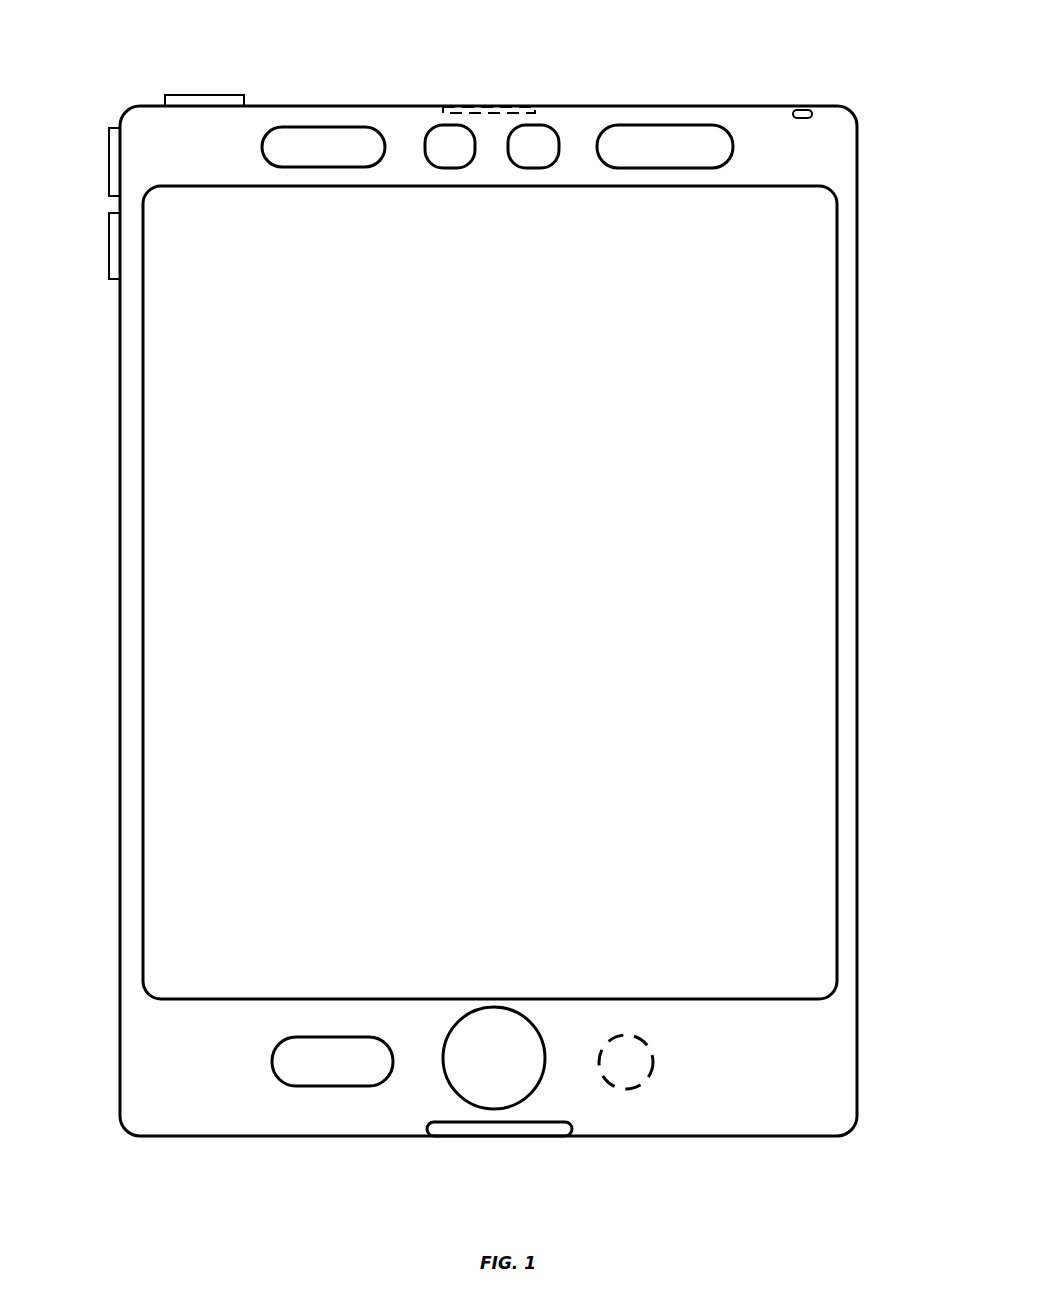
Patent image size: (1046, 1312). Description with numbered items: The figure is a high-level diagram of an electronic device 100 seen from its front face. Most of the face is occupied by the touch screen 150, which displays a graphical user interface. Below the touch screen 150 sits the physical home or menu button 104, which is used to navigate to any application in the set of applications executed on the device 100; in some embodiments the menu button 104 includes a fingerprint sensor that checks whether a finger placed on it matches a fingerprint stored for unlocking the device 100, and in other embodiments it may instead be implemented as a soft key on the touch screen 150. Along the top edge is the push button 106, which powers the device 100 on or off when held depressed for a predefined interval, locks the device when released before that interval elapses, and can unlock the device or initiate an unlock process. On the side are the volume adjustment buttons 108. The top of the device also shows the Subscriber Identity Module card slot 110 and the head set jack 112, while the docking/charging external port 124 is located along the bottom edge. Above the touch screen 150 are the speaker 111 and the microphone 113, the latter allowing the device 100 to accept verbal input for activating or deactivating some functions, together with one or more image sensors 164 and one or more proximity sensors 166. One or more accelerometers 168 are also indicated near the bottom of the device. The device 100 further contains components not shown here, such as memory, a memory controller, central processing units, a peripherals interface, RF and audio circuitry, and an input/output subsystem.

The electronic device 100 is at (893, 108).
The menu button 104 is at (494, 1058).
The push button 106 is at (210, 95).
The volume adjustment buttons 108 is at (110, 162).
The Subscriber Identity Module (SIM) card slot 110 is at (468, 107).
The speaker 111 is at (306, 157).
The head set jack 112 is at (799, 110).
The microphone 113 is at (315, 1072).
The docking/charging external port 124 is at (543, 1138).
The touch screen 150 is at (836, 486).
The image sensors 164 is at (433, 156).
The proximity sensors 166 is at (648, 156).
The accelerometers 168 is at (609, 1074).